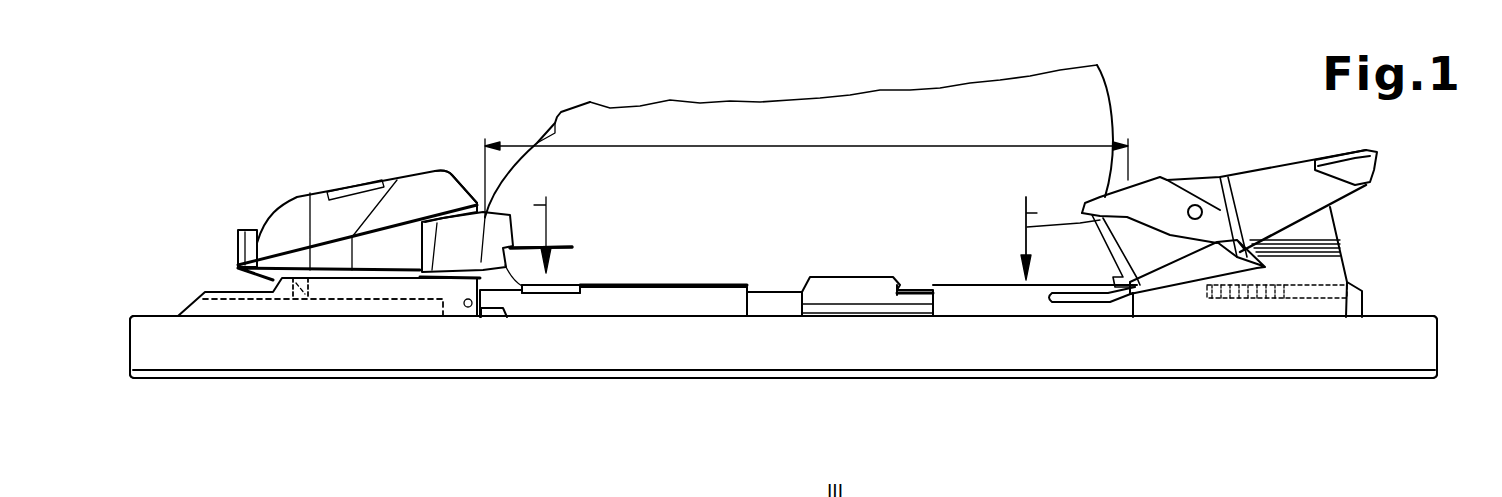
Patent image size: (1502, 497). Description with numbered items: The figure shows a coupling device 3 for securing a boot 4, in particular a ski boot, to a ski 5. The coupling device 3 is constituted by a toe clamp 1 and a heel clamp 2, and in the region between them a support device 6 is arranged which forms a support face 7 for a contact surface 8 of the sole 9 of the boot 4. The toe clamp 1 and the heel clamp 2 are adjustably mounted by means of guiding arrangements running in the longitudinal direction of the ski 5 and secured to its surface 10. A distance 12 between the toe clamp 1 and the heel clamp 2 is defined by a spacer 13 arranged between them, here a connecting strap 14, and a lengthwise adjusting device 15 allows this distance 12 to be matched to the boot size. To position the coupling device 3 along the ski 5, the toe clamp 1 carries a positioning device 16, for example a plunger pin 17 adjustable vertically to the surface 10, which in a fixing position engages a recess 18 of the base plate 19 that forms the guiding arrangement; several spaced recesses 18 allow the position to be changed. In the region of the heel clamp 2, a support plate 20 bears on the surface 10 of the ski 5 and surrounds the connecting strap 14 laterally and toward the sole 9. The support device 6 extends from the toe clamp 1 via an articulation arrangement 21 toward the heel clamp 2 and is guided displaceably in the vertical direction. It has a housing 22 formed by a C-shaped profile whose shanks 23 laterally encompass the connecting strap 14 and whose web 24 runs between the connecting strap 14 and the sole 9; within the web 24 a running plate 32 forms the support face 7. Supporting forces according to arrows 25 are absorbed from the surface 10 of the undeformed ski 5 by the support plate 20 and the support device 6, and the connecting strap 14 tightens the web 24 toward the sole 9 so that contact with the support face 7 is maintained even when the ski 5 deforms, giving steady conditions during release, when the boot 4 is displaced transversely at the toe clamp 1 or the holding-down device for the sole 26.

The toe clamp 1 is at (313, 213).
The heel clamp 2 is at (1248, 197).
The coupling device 3 is at (347, 126).
The boot 4 is at (650, 183).
The ski 5 is at (708, 353).
The support device 6 is at (568, 247).
The support face 7 is at (563, 288).
The contact surface 8 is at (747, 290).
The sole 9 is at (1020, 238).
The surface of the ski 10 is at (160, 313).
The distance 12 is at (697, 146).
The spacer 13 is at (933, 323).
The connecting strap 14 is at (902, 310).
The lengthwise adjusting device 15 is at (843, 331).
The positioning device 16 is at (248, 229).
The plunger pin 17 is at (302, 300).
The recess 18 is at (300, 293).
The base plate 19 is at (243, 305).
The support plate 20 is at (1020, 310).
The articulation arrangement 21 is at (466, 310).
The housing 22 is at (548, 318).
The shanks 23 is at (627, 327).
The web 24 is at (487, 233).
The arrows 25 is at (546, 197).
The holding-down device for the sole 26 is at (462, 234).
The running plate 32 is at (565, 294).